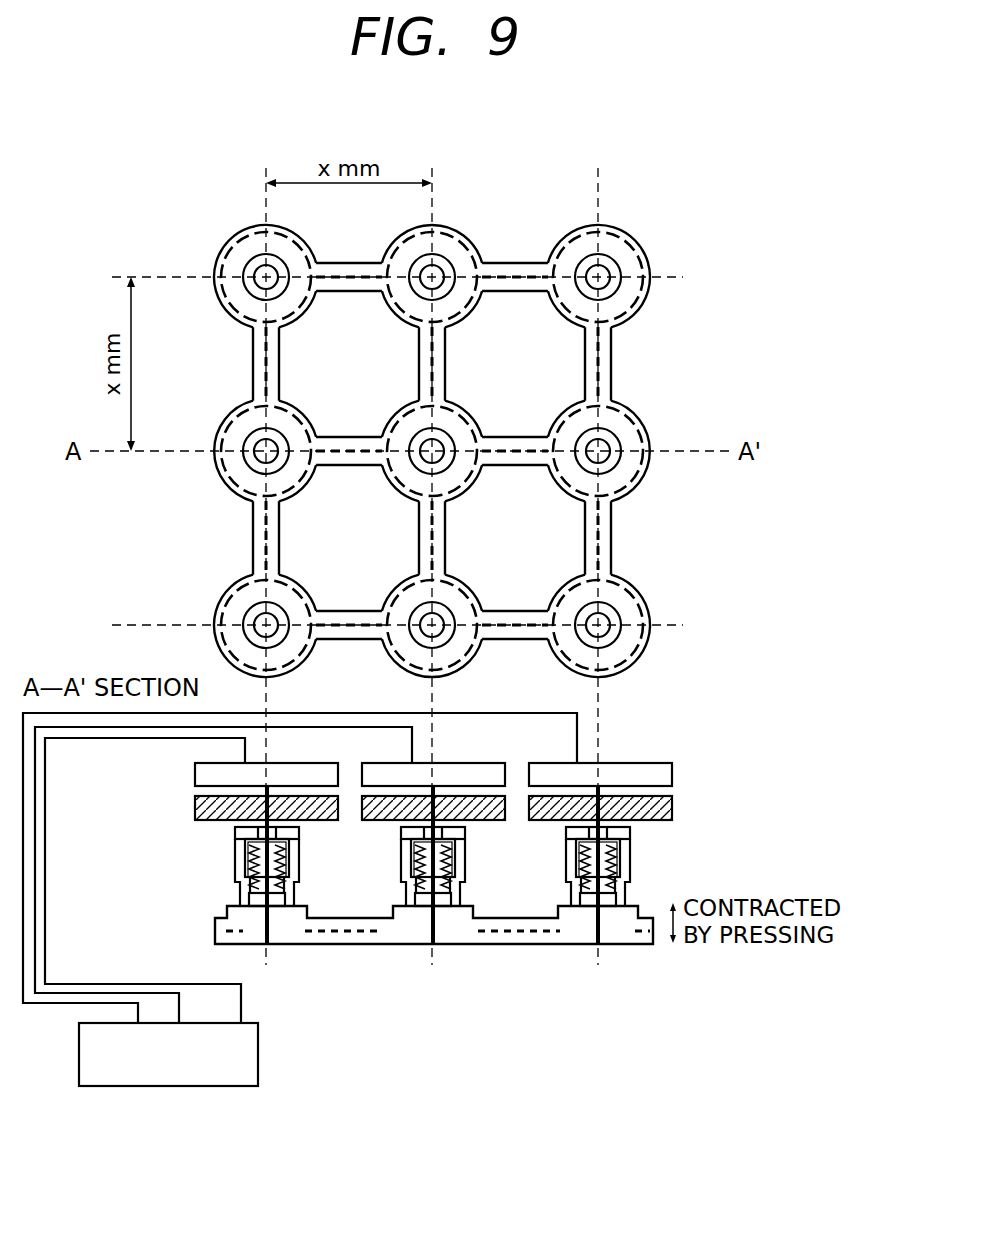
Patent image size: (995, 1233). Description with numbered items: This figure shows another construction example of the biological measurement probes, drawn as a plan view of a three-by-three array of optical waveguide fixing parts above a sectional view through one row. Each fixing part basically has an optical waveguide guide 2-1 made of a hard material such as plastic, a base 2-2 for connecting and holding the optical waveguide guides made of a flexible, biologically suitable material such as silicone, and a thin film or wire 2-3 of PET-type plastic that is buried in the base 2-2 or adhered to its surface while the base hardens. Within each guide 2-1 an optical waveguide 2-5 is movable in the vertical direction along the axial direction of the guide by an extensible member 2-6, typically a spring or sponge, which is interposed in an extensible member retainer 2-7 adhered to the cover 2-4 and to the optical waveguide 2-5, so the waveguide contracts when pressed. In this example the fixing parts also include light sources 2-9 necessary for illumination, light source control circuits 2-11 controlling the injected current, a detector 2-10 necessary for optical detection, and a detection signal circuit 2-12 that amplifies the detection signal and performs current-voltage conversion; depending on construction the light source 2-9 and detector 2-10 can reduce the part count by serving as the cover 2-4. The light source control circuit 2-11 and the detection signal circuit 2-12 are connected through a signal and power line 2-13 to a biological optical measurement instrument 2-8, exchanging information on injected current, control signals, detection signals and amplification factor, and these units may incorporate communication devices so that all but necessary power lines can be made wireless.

The optical waveguide guide 2-1 is at (633, 624).
The base for connecting and holding the optical waveguide guides 2-2 is at (640, 243).
The thin film or wire 2-3 is at (460, 232).
The cover 2-4 is at (624, 833).
The optical waveguide 2-5 is at (607, 930).
The extensible member 2-6 is at (240, 855).
The extensible member retainer 2-7 is at (250, 897).
The biological optical measurement instrument 2-8 is at (258, 1048).
The light source 2-9 is at (196, 805).
The detector 2-10 is at (383, 820).
The light source control circuit 2-11 is at (196, 774).
The detection signal circuit 2-12 is at (376, 762).
The signal and power line 2-13 is at (245, 745).